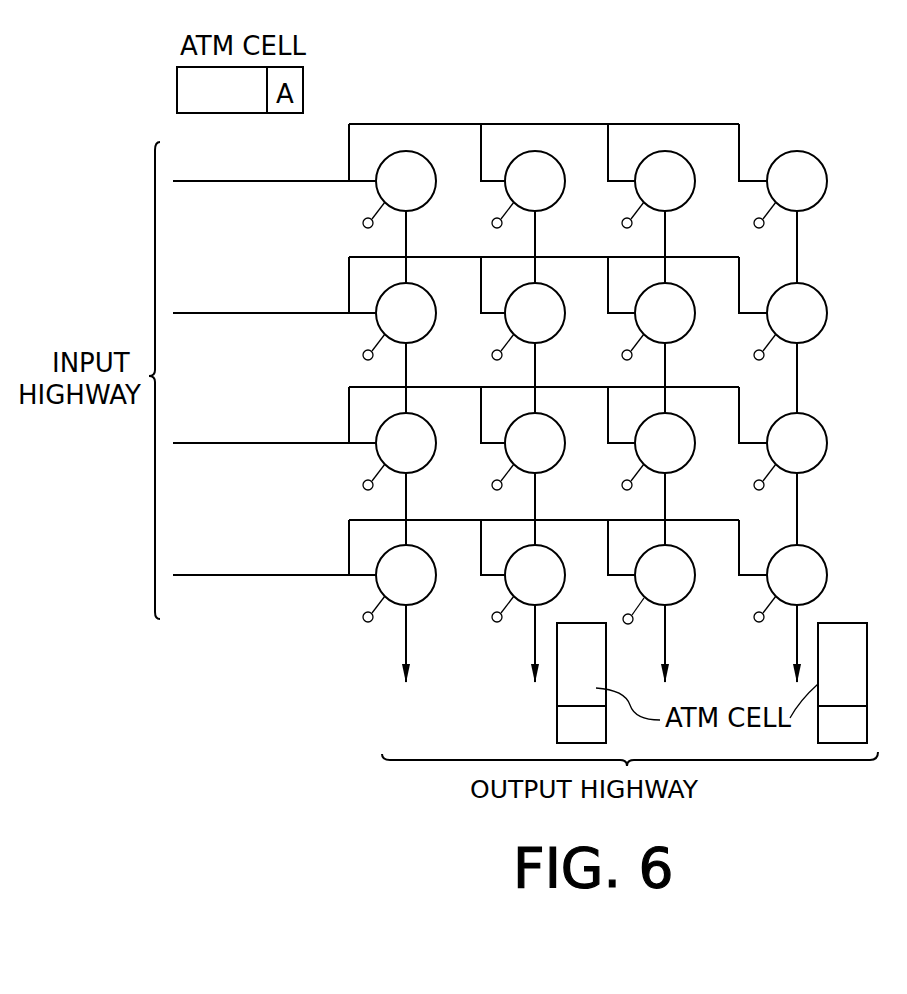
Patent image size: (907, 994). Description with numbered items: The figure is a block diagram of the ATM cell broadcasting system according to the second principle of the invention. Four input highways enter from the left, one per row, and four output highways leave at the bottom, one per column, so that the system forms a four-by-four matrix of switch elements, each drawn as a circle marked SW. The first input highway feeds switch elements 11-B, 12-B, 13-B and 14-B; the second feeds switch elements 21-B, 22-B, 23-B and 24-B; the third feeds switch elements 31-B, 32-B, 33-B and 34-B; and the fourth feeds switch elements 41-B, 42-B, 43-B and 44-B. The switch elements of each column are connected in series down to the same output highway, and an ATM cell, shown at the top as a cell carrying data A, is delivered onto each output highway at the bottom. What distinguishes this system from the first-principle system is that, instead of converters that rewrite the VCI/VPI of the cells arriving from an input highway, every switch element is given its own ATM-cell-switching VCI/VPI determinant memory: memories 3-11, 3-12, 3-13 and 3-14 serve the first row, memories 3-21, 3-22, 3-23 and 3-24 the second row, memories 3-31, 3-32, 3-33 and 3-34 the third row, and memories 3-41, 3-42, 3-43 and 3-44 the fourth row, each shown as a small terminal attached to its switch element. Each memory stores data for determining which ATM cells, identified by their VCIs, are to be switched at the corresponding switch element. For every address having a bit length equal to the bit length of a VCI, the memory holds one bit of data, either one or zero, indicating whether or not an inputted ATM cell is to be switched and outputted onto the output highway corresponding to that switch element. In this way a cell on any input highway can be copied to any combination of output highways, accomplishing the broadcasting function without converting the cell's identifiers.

The switch element 11-B is at (433, 151).
The switch element 12-B is at (562, 151).
The switch element 13-B is at (692, 151).
The switch element 14-B is at (813, 157).
The switch element 21-B is at (433, 284).
The switch element 22-B is at (562, 284).
The switch element 23-B is at (692, 284).
The switch element 24-B is at (813, 290).
The switch element 31-B is at (433, 414).
The switch element 32-B is at (562, 414).
The switch element 33-B is at (692, 414).
The switch element 34-B is at (815, 420).
The switch element 41-B is at (433, 547).
The switch element 42-B is at (562, 547).
The switch element 43-B is at (692, 547).
The switch element 44-B is at (813, 552).
The ATM-cell-switching VCI/VPI determinant memory 3-11 is at (363, 224).
The ATM-cell-switching VCI/VPI determinant memory 3-12 is at (492, 224).
The ATM-cell-switching VCI/VPI determinant memory 3-13 is at (622, 224).
The ATM-cell-switching VCI/VPI determinant memory 3-14 is at (754, 224).
The ATM-cell-switching VCI/VPI determinant memory 3-21 is at (363, 356).
The ATM-cell-switching VCI/VPI determinant memory 3-22 is at (492, 356).
The ATM-cell-switching VCI/VPI determinant memory 3-23 is at (622, 356).
The ATM-cell-switching VCI/VPI determinant memory 3-24 is at (754, 356).
The ATM-cell-switching VCI/VPI determinant memory 3-31 is at (363, 486).
The ATM-cell-switching VCI/VPI determinant memory 3-32 is at (492, 486).
The ATM-cell-switching VCI/VPI determinant memory 3-33 is at (622, 486).
The ATM-cell-switching VCI/VPI determinant memory 3-34 is at (754, 486).
The ATM-cell-switching VCI/VPI determinant memory 3-41 is at (363, 618).
The ATM-cell-switching VCI/VPI determinant memory 3-42 is at (492, 618).
The ATM-cell-switching VCI/VPI determinant memory 3-43 is at (623, 619).
The ATM-cell-switching VCI/VPI determinant memory 3-44 is at (754, 618).